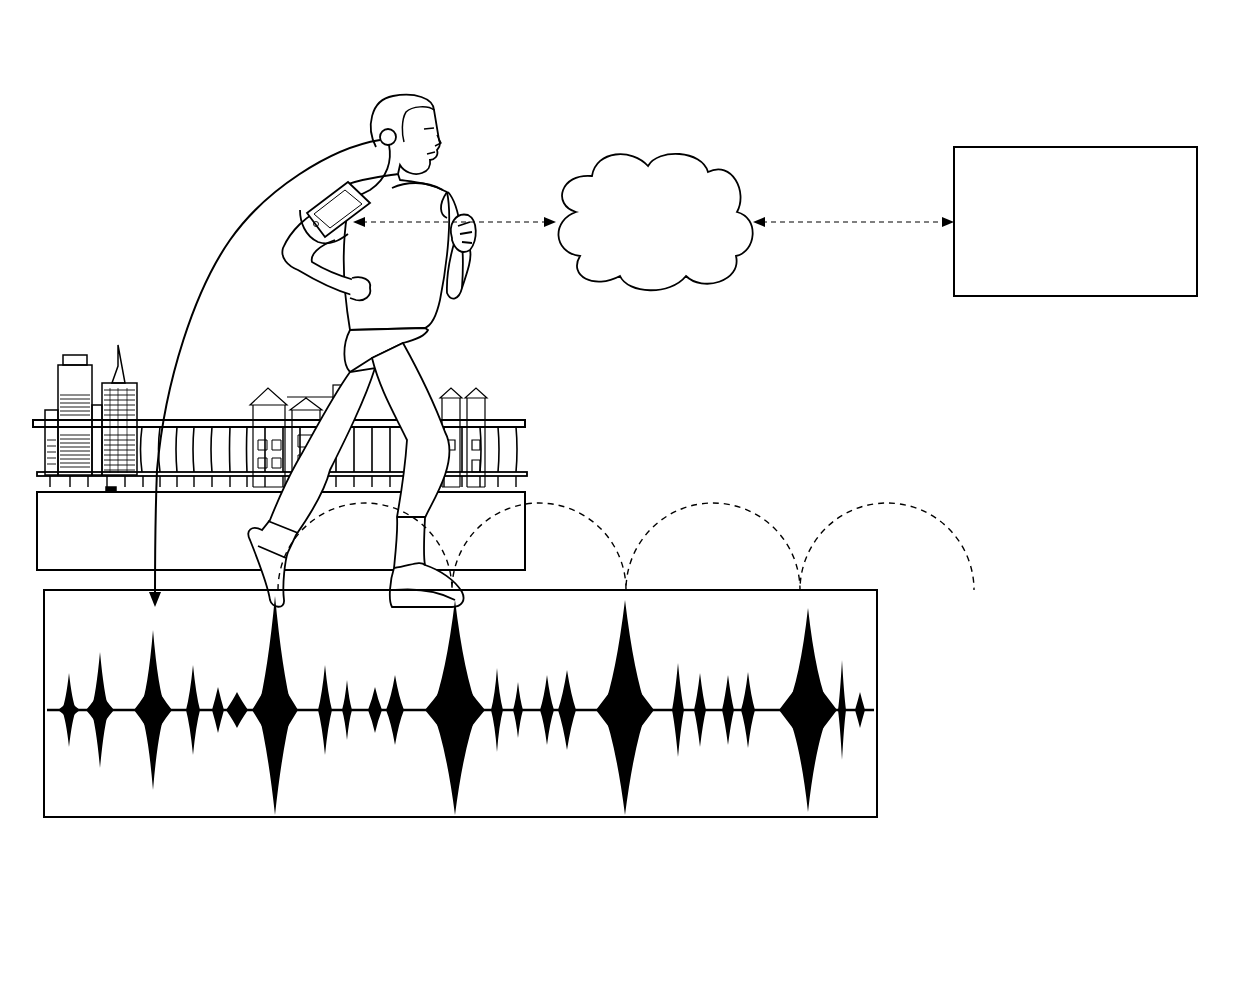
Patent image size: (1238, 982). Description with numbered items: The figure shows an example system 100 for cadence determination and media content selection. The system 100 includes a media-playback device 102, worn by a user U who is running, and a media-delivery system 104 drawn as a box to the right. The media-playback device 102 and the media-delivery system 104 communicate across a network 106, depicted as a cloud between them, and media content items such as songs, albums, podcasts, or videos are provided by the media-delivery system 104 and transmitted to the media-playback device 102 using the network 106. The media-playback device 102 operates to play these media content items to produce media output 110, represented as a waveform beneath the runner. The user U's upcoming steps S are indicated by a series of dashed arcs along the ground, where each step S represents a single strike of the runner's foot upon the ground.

The system 100 is at (158, 80).
The media-playback device 102 is at (322, 200).
The media-delivery system 104 is at (1020, 147).
The network 106 is at (652, 155).
The media output 110 is at (878, 667).
The user U is at (450, 82).
The steps S is at (713, 503).